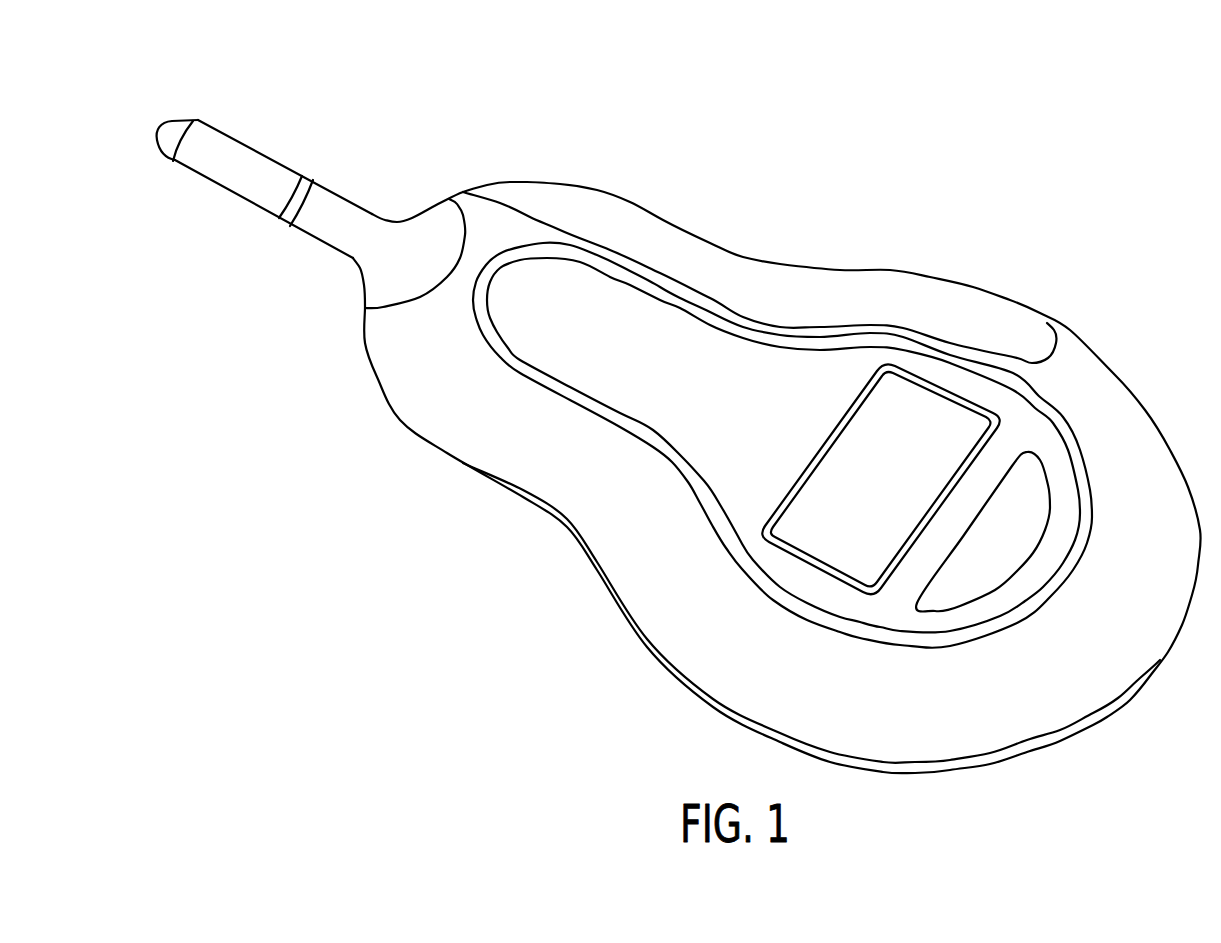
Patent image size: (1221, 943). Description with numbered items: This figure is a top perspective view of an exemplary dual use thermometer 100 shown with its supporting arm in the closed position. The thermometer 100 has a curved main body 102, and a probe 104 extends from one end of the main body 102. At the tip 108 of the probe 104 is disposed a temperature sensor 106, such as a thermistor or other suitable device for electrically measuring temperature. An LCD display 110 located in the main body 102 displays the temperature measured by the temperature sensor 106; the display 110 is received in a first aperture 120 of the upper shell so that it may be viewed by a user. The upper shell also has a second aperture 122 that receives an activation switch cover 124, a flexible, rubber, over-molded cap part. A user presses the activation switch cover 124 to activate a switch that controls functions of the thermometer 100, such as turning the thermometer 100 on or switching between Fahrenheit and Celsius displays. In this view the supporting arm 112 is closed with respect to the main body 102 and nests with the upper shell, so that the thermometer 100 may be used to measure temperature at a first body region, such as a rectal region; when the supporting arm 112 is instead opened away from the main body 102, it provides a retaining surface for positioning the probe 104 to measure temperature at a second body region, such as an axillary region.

The thermometer 100 is at (670, 413).
The main body 102 is at (1067, 327).
The probe 104 is at (256, 155).
The temperature sensor 106 is at (173, 113).
The tip 108 is at (167, 158).
The LCD display 110 is at (940, 526).
The supporting arm 112 is at (597, 190).
The first aperture 120 is at (873, 598).
The second aperture 122 is at (1025, 573).
The activation switch cover 124 is at (1030, 527).